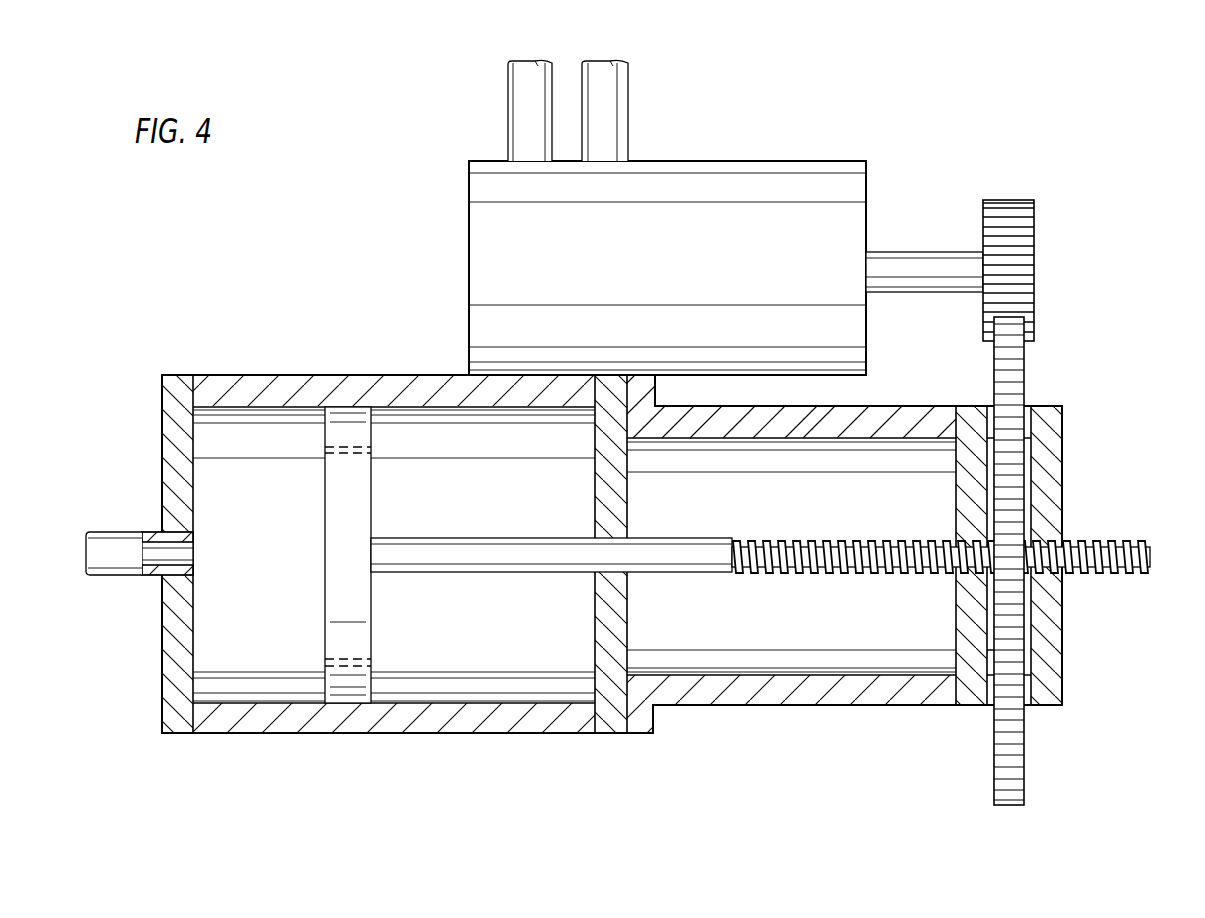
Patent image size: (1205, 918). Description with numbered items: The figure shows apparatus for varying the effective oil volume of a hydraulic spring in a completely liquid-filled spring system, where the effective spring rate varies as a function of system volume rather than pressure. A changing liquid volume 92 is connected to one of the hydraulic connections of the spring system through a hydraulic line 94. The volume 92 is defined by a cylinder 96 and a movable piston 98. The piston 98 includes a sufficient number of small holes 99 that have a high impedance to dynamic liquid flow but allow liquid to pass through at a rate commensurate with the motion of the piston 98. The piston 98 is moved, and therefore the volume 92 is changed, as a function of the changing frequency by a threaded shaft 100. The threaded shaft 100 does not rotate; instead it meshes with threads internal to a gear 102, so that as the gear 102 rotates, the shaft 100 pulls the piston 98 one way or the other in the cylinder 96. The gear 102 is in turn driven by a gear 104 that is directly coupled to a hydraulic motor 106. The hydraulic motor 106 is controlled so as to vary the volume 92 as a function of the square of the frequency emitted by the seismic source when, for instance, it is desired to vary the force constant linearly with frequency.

The changing liquid volume 92 is at (248, 653).
The hydraulic line 94 is at (108, 532).
The cylinder 96 is at (286, 720).
The movable piston 98 is at (325, 503).
The small holes 99 is at (372, 450).
The threaded shaft 100 is at (1117, 540).
The gear 102 is at (1010, 760).
The gear 104 is at (1023, 233).
The hydraulic motor 106 is at (736, 178).